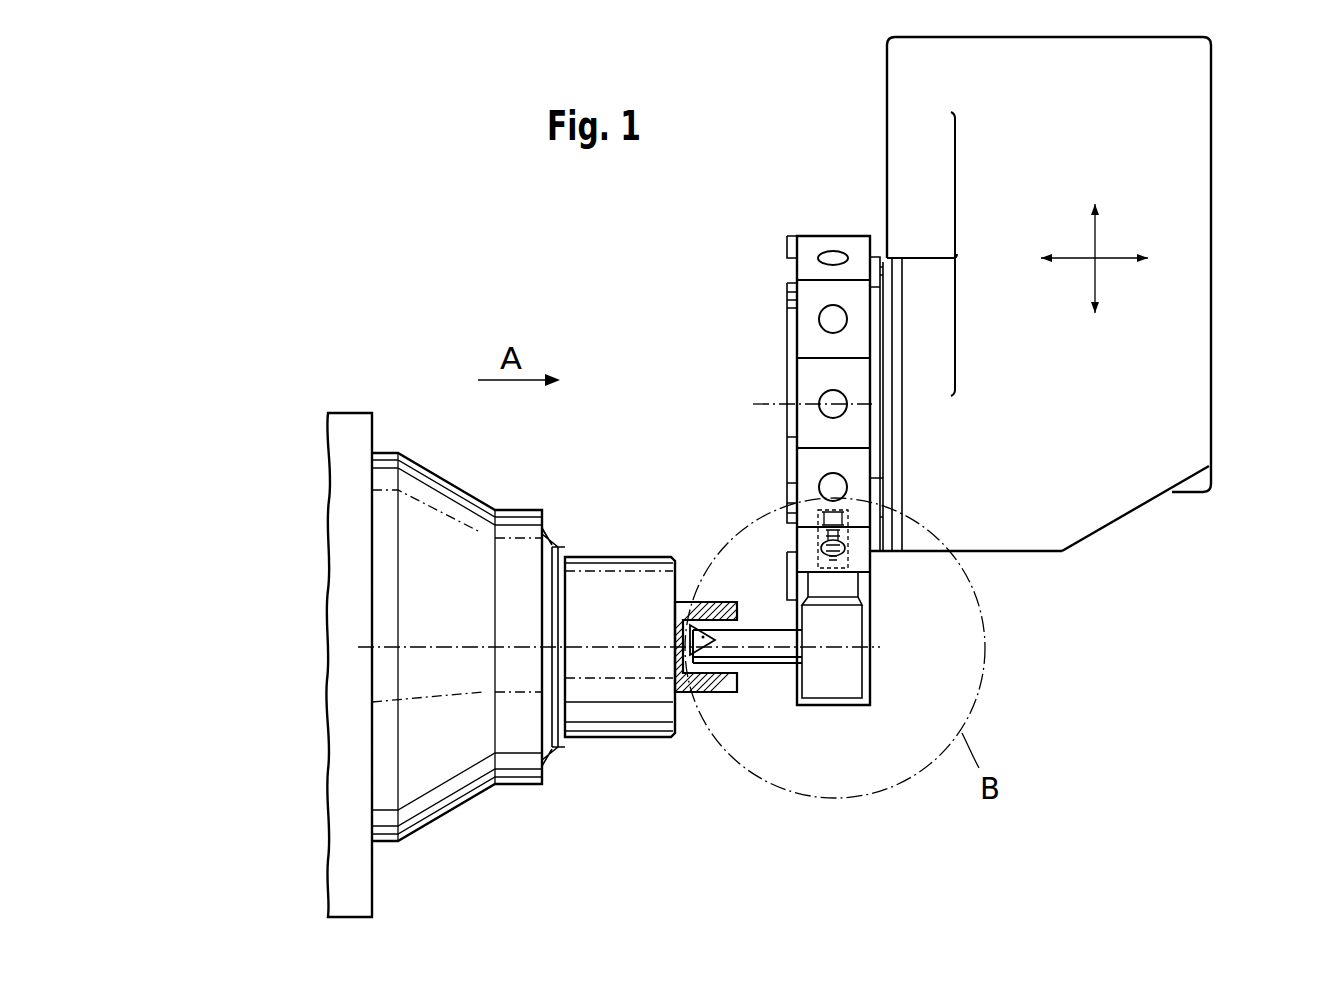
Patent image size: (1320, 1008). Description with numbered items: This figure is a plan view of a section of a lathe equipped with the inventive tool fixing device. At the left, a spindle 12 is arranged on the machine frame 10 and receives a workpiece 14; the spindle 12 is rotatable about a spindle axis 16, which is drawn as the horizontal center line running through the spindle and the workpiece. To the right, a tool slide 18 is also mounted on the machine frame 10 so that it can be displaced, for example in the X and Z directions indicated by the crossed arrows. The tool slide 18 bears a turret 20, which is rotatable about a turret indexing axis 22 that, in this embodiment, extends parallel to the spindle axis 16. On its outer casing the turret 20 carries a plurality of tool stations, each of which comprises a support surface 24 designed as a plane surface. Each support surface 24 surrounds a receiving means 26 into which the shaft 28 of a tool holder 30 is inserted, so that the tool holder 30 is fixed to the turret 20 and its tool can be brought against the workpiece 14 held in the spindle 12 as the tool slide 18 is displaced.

The machine frame 10 is at (342, 462).
The spindle 12 is at (566, 514).
The workpiece 14 is at (713, 687).
The spindle axis 16 is at (622, 647).
The tool slide 18 is at (1189, 112).
The turret 20 is at (777, 452).
The turret indexing axis 22 is at (765, 404).
The support surface 24 is at (803, 300).
The receiving means 26 is at (825, 320).
The shaft 28 is at (852, 532).
The tool holder 30 is at (878, 657).